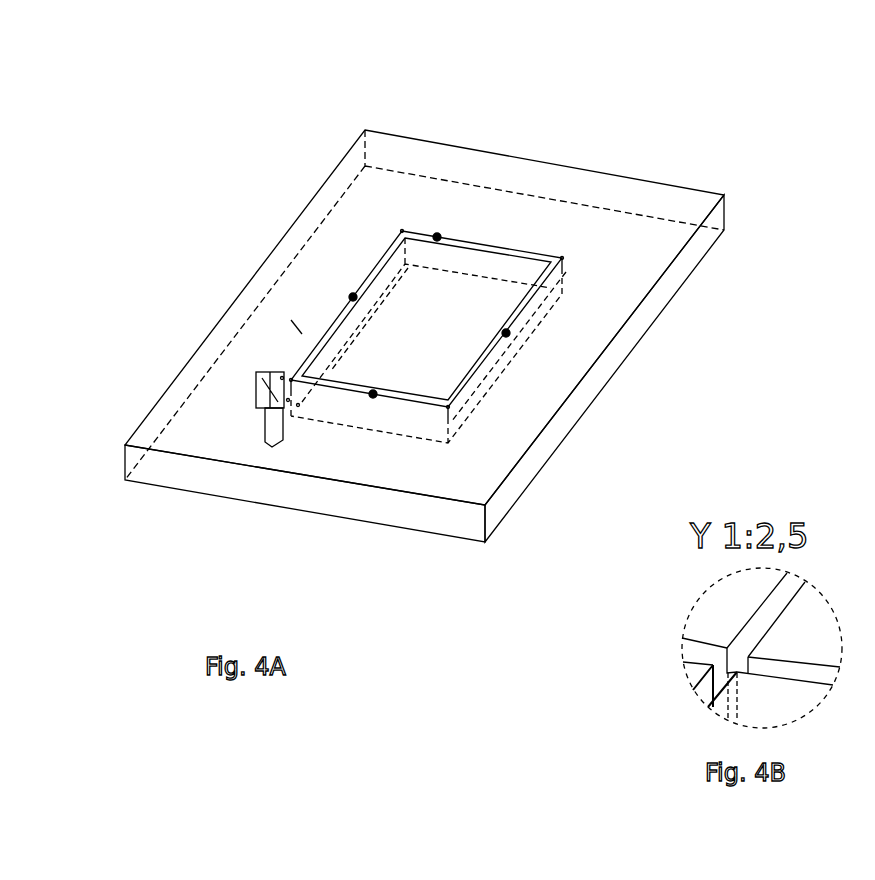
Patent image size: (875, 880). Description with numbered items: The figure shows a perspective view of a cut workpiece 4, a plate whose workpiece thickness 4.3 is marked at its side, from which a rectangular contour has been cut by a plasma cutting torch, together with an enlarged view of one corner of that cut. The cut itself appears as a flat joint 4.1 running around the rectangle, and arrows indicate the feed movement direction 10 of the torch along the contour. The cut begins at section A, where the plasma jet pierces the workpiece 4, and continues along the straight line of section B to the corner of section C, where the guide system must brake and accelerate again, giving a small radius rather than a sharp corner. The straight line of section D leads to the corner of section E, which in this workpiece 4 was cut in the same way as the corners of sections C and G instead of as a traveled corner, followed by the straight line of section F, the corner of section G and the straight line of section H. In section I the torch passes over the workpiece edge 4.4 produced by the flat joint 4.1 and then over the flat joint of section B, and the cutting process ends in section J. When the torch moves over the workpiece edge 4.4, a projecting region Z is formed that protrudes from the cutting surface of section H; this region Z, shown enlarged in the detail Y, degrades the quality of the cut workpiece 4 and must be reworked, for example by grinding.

In FIG. 4A, the workpiece 4 is at (491, 251).
In FIG. 4A, the flat joint 4.1 is at (530, 250).
In FIG. 4A, the workpiece thickness 4.3 is at (724, 195).
In FIG. 4A, the workpiece edge 4.4 is at (290, 355).
In FIG. 4A, the feed movement direction of the plasma cutting torch, cutting direction 10 is at (383, 222).
In FIG. 4A, the section A stabbing A is at (288, 400).
In FIG. 4A, the section B straight line B is at (353, 297).
In FIG. 4A, the section C corner C is at (402, 231).
In FIG. 4A, the section D straight line D is at (437, 237).
In FIG. 4A, the section E corner E is at (562, 258).
In FIG. 4A, the section F straight line F is at (506, 333).
In FIG. 4A, the section G corner G is at (448, 407).
In FIG. 4A, the section H straight line H is at (373, 394).
In FIG. 4A, the section I, passing through the workpiece edge I is at (282, 378).
In FIG. 4A, the section J, cut end J is at (291, 380).
In FIG. 4A, the detail view Y is at (294, 311).
In FIG. 4A, the region Z is at (298, 405).
In FIG. 4B, the region Z is at (693, 690).